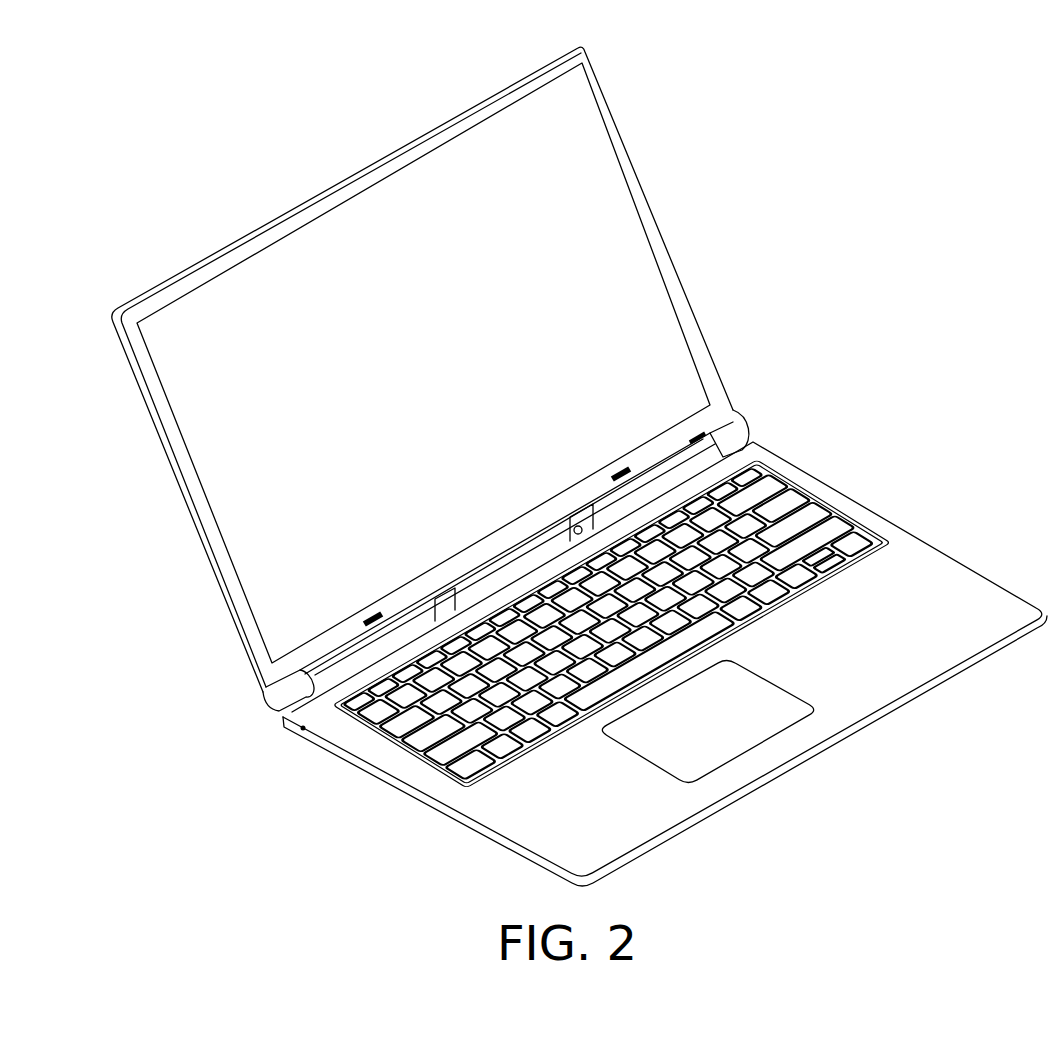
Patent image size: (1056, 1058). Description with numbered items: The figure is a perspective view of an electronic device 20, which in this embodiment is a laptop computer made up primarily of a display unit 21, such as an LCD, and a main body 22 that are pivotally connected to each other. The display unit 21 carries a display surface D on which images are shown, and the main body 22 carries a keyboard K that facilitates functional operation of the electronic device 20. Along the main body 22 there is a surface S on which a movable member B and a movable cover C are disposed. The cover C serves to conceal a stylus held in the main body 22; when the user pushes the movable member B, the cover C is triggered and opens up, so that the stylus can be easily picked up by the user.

The electronic device 20 is at (92, 78).
The display unit 21 is at (409, 369).
The main body 22 is at (408, 802).
The display surface D is at (617, 212).
The movable cover C is at (518, 568).
The movable member B is at (610, 513).
The keyboard K is at (798, 527).
The surface S is at (318, 680).